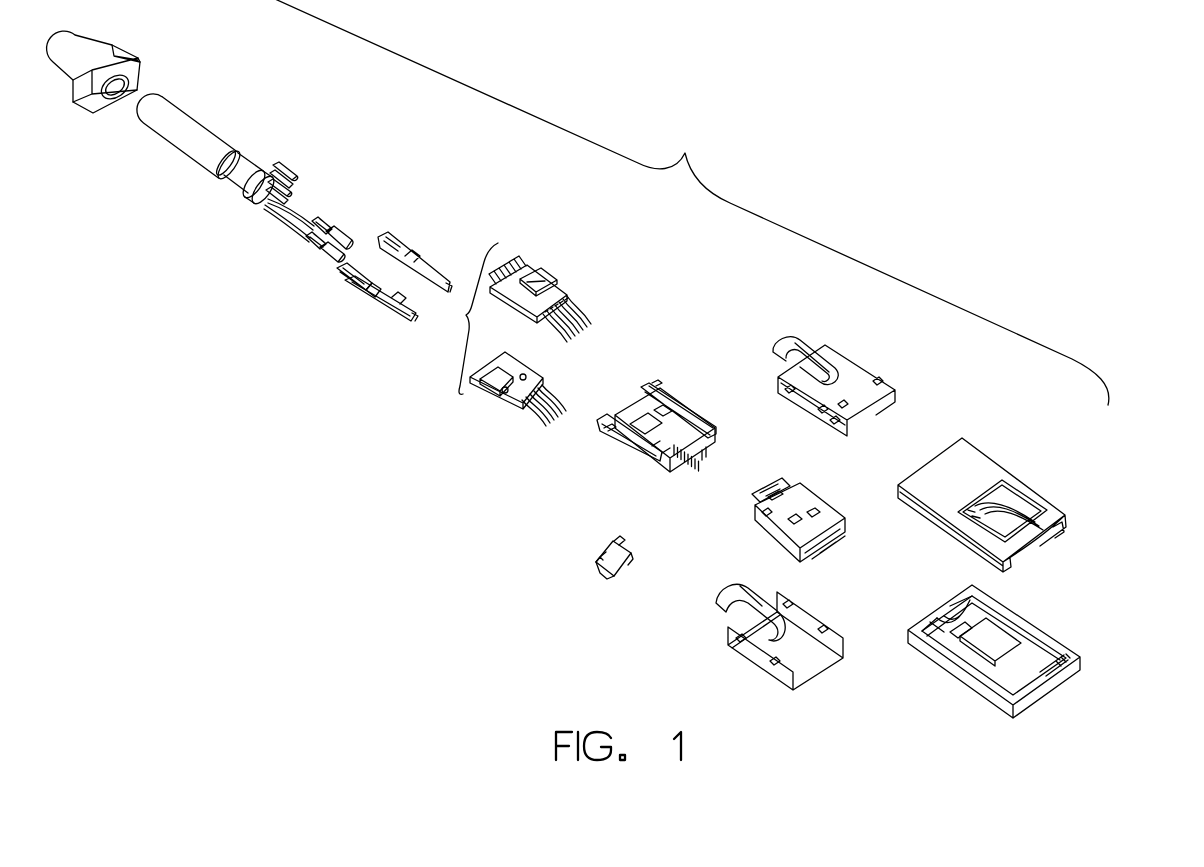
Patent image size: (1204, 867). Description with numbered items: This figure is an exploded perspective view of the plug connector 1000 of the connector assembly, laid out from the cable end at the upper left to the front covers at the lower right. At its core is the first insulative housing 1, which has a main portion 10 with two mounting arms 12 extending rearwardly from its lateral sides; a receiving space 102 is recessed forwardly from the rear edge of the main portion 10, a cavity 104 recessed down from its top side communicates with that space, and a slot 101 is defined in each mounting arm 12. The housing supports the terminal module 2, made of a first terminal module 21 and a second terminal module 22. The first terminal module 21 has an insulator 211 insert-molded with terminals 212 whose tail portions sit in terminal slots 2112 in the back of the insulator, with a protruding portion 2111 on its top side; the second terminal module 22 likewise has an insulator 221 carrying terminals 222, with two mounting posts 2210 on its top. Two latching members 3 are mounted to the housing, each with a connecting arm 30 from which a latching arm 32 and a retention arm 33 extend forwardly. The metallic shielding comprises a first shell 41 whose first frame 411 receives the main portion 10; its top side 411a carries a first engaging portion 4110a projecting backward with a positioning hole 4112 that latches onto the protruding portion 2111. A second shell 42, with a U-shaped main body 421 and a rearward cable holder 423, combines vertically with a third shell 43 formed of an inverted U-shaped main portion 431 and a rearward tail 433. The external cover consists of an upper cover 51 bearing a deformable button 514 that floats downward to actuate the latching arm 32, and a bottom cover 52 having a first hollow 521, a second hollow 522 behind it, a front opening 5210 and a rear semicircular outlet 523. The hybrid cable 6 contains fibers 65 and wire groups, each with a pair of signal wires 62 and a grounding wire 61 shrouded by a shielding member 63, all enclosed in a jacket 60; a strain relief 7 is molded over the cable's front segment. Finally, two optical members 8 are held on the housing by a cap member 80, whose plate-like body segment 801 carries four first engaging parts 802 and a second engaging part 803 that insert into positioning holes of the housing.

The plug connector 1000 is at (692, 202).
The first insulative housing 1 is at (671, 414).
The main portion 10 is at (658, 431).
The mounting arms 12 is at (665, 388).
The slot 101 is at (672, 400).
The receiving space 102 is at (655, 421).
The cavity 104 is at (718, 448).
The terminal module 2 is at (471, 318).
The first terminal module 21 is at (577, 271).
The insulator 211 is at (549, 293).
The terminals 212 is at (588, 311).
The protruding portion 2111 is at (545, 283).
The terminal slots 2112 is at (522, 268).
The second terminal module 22 is at (525, 403).
The insulator 221 is at (490, 379).
The mounting posts 2210 is at (505, 393).
The terminals 222 is at (535, 419).
The latching members 3 is at (424, 244).
The connecting arm 30 is at (345, 277).
The latching arm 32 is at (402, 315).
The retention arm 33 is at (370, 303).
The first shell 41 is at (802, 508).
The first frame 411 is at (815, 526).
The top side 411a is at (828, 541).
The first engaging portion 4110a is at (780, 490).
The positioning hole 4112 is at (760, 496).
The second shell 42 is at (773, 634).
The main body 421 is at (750, 656).
The cable holder 423 is at (718, 613).
The third shell 43 is at (864, 359).
The main portion 431 is at (840, 378).
The tail 433 is at (790, 350).
The upper cover 51 is at (1011, 494).
The deformable button 514 is at (1022, 519).
The bottom cover 52 is at (1015, 646).
The first hollow 521 is at (1000, 674).
The second hollow 522 is at (955, 633).
The outlet 523 is at (950, 617).
The opening 5210 is at (1065, 691).
The cable 6 is at (216, 148).
The jacket 60 is at (196, 128).
The grounding wire 61 is at (300, 196).
The signal wires 62 is at (292, 177).
The shielding member 63 is at (272, 172).
The fibers 65 is at (292, 226).
The strain relief 7 is at (150, 42).
The optical members 8 is at (318, 250).
The cap member 80 is at (616, 538).
The body segment 801 is at (605, 569).
The first engaging parts 802 is at (618, 545).
The second engaging part 803 is at (600, 553).